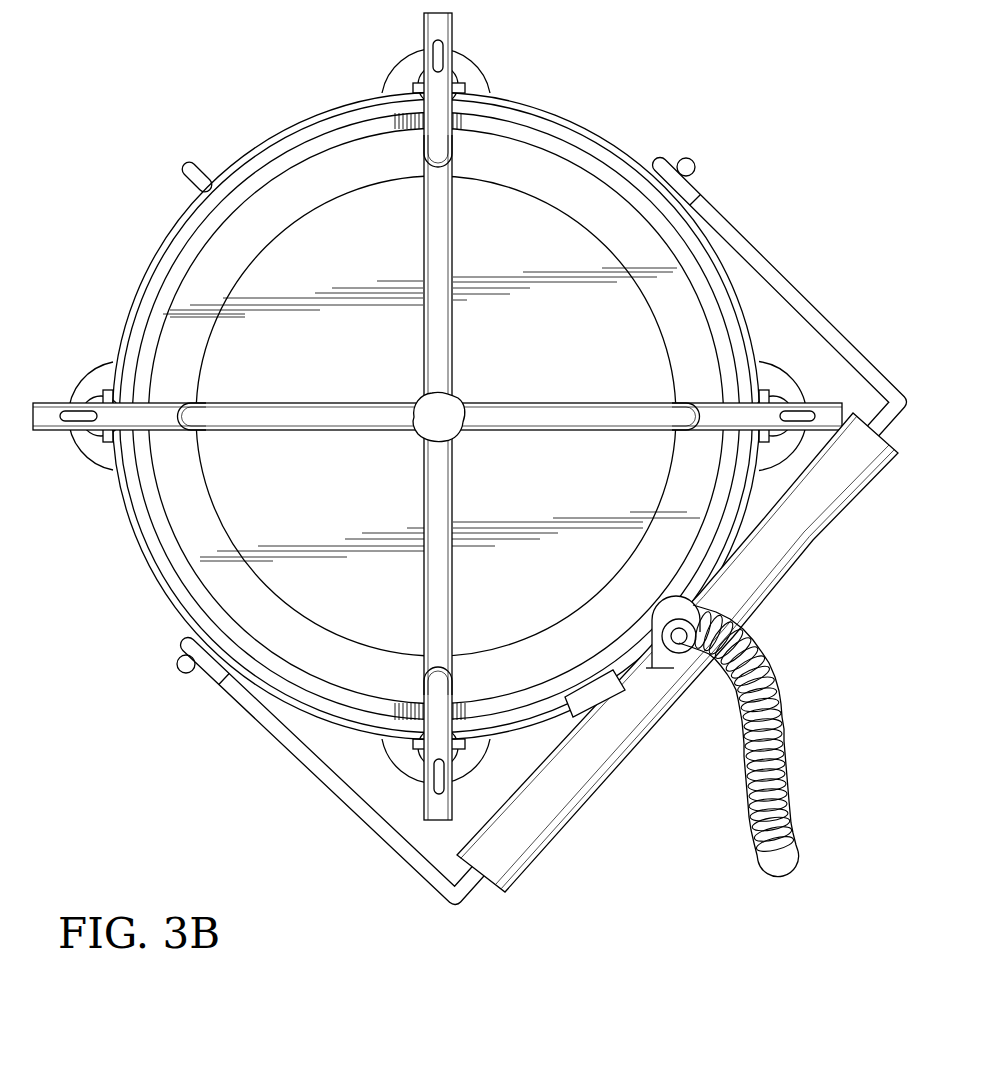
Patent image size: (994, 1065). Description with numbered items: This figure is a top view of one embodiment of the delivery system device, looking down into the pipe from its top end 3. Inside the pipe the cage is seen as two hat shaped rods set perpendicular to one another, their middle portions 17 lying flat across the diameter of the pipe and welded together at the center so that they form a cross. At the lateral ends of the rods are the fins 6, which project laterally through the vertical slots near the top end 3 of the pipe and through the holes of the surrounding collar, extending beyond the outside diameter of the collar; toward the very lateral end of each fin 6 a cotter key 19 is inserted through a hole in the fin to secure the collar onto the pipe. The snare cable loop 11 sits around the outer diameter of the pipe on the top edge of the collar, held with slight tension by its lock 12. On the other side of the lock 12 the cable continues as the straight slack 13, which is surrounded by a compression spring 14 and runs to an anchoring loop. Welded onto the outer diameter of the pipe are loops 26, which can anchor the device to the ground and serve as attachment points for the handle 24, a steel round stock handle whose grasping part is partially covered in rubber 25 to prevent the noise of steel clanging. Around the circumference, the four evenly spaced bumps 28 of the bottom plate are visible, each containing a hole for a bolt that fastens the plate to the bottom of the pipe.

The top end 3 is at (558, 148).
The fin 6 is at (432, 153).
The snare cable loop 11 is at (308, 710).
The lock 12 is at (700, 616).
The straight slack 13 is at (785, 858).
The compression spring 14 is at (788, 787).
The middle portion 17 is at (452, 338).
The cotter key 19 is at (442, 62).
The handle 24 is at (788, 277).
The rubber 25 is at (777, 582).
The loops 26 is at (690, 160).
The bumps 28 is at (486, 78).